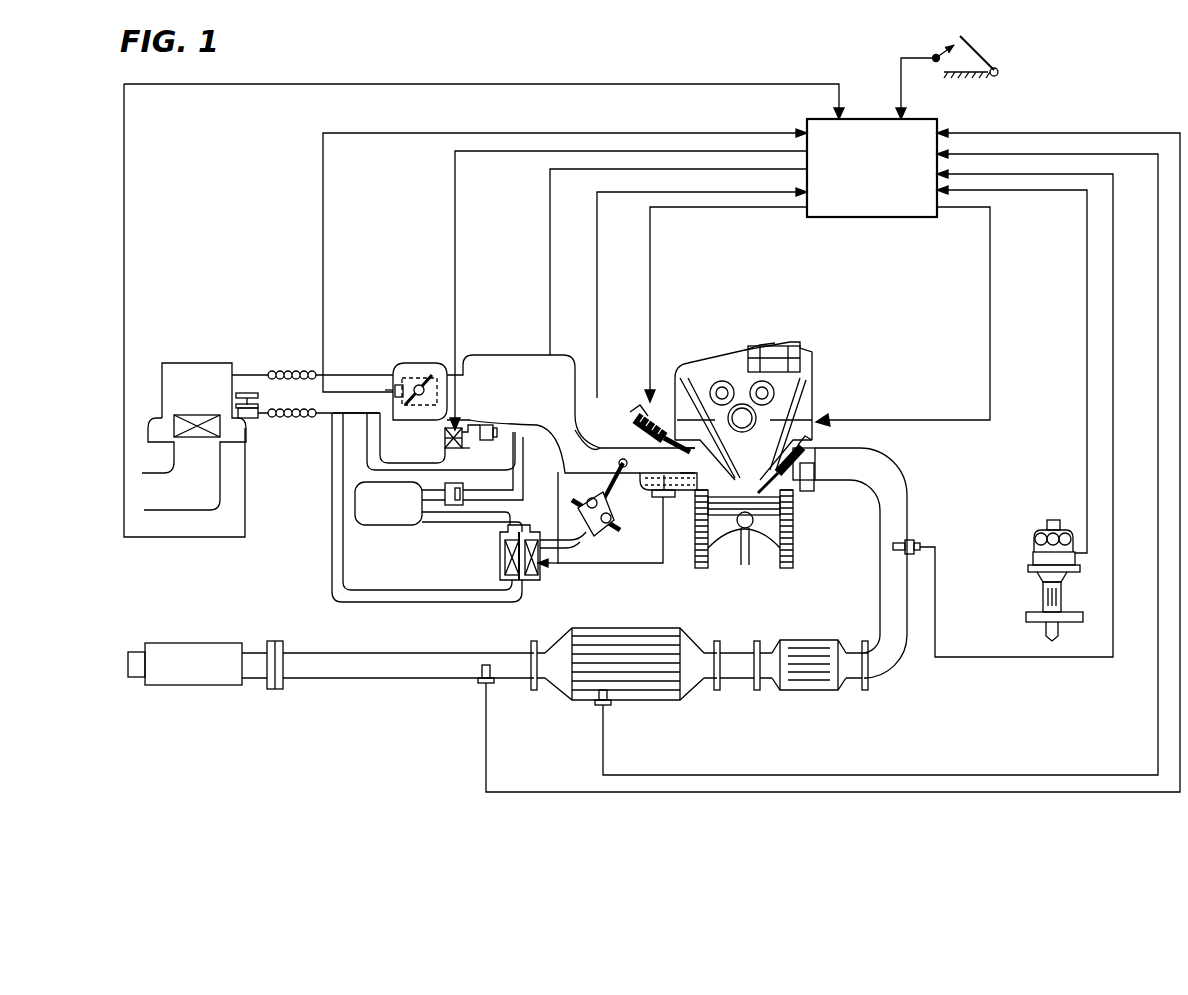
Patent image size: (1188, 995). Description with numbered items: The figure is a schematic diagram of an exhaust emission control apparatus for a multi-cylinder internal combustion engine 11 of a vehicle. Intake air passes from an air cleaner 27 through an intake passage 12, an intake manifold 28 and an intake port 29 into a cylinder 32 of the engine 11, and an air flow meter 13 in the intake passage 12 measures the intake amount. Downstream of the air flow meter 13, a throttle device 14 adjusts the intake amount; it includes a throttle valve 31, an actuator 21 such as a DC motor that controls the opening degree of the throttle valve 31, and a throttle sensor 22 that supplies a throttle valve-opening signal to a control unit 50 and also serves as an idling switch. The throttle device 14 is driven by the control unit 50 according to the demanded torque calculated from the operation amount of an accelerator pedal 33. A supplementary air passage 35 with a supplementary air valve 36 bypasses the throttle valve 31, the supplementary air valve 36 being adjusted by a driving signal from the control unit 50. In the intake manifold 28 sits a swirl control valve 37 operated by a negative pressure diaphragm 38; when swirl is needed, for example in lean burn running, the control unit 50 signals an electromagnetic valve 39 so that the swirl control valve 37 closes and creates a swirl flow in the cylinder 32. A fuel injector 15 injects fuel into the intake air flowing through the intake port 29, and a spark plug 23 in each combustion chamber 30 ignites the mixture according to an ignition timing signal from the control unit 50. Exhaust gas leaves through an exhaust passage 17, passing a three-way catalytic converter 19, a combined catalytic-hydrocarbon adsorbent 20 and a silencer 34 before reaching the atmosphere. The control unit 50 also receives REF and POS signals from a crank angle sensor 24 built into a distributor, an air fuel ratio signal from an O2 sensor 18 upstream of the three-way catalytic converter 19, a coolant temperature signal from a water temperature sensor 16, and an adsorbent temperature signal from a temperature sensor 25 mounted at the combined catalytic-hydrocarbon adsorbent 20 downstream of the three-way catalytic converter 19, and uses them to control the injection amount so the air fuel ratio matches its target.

The engine 11 is at (800, 500).
The intake passage 12 is at (344, 382).
The air flow meter 13 is at (258, 418).
The throttle device 14 is at (403, 420).
The fuel injector 15 is at (660, 408).
The water temperature sensor 16 is at (656, 497).
The exhaust passage 17 is at (900, 660).
The O2 sensor 18 is at (912, 538).
The three-way catalytic converter 19 is at (818, 692).
The combined catalytic-hydrocarbon adsorbent 20 is at (642, 702).
The actuator 21 is at (427, 366).
The throttle sensor 22 is at (395, 383).
The spark plug 23 is at (812, 468).
The crank angle sensor 24 is at (1032, 556).
The temperature sensor 25 is at (598, 704).
The air cleaner 27 is at (201, 415).
The intake manifold 28 is at (580, 383).
The intake port 29 is at (692, 466).
The combustion chamber 30 is at (738, 500).
The throttle valve 31 is at (424, 380).
The cylinder 32 is at (778, 545).
The accelerator pedal 33 is at (983, 52).
The silencer 34 is at (206, 690).
The supplementary air passage 35 is at (478, 458).
The supplementary air valve 36 is at (445, 437).
The swirl control valve 37 is at (620, 459).
The negative pressure diaphragm 38 is at (597, 530).
The electromagnetic valve 39 is at (500, 556).
The control unit 50 is at (852, 218).